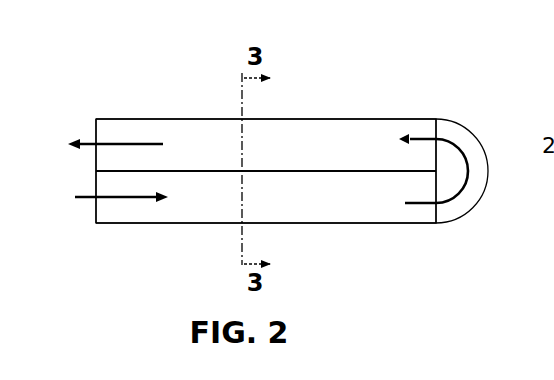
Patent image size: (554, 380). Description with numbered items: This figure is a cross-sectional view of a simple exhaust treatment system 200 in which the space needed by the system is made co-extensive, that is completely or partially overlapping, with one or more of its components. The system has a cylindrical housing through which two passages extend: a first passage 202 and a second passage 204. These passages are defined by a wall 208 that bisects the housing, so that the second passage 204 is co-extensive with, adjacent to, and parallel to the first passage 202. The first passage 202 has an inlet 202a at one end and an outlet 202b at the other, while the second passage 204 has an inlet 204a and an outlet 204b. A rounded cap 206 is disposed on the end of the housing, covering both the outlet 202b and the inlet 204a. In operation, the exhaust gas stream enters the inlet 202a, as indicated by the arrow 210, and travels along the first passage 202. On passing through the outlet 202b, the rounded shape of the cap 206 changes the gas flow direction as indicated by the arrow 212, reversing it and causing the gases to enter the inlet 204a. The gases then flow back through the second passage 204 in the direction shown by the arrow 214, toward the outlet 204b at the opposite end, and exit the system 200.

The exhaust treatment system 200 is at (106, 52).
The first passage 202 is at (318, 209).
The second passage 204 is at (318, 157).
The rounded cap 206 is at (485, 195).
The wall 208 is at (172, 171).
The arrow 210 is at (88, 197).
The arrow 212 is at (467, 162).
The arrow 214 is at (120, 145).
The inlet 202a is at (97, 213).
The outlet 202b is at (438, 213).
The inlet 204a is at (438, 128).
The outlet 204b is at (95, 131).